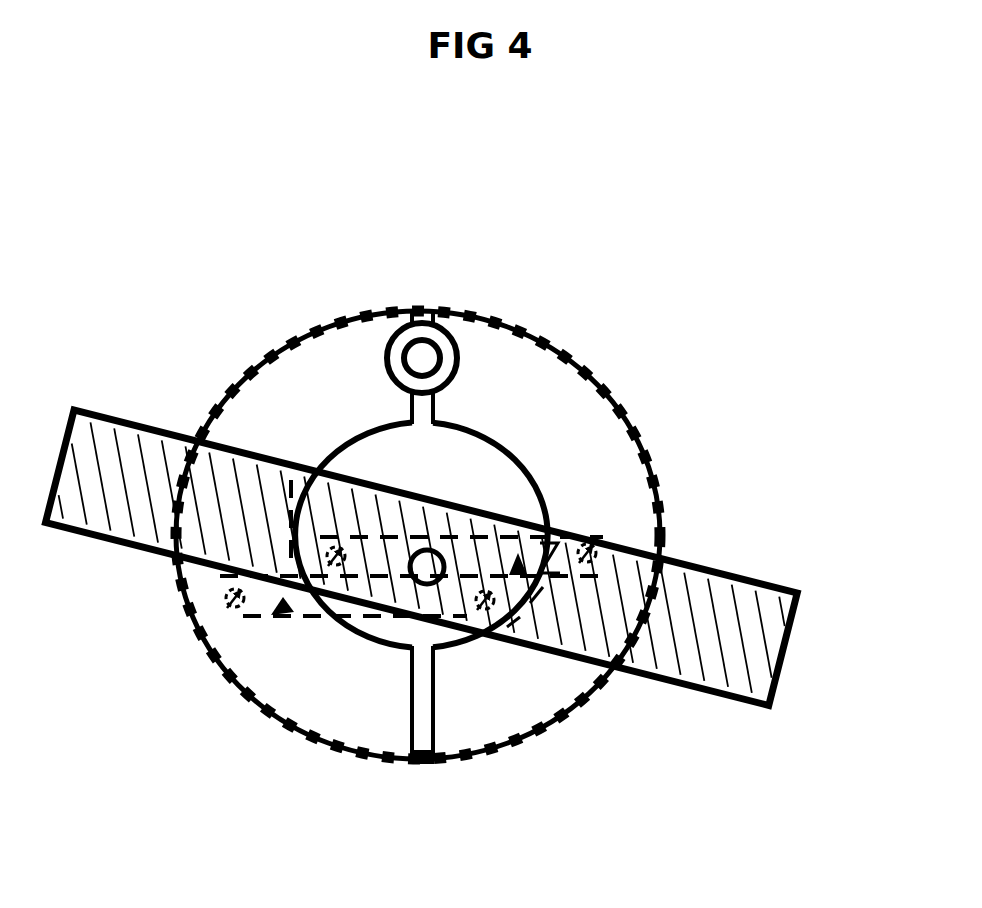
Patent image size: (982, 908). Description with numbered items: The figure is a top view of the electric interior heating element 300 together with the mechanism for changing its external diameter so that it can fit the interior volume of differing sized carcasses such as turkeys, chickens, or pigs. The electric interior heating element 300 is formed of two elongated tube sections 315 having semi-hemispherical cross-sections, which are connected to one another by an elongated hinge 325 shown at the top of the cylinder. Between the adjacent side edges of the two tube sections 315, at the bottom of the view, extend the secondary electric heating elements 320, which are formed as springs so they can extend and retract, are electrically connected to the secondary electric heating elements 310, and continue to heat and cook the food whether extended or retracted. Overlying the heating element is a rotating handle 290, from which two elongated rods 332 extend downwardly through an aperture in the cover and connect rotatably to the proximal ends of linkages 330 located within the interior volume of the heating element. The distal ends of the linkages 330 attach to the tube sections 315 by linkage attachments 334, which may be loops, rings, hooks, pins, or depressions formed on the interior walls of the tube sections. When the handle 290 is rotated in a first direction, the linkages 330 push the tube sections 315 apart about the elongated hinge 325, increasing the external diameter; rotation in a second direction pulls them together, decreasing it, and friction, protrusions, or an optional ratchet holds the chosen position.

The rotating handle 290 is at (717, 600).
The electric interior heating element 300 is at (578, 330).
The secondary electric heating elements 310 is at (233, 387).
The elongated tube sections 315 is at (333, 392).
The secondary electric heating elements 320 is at (423, 767).
The elongated hinge 325 is at (423, 352).
The linkages 330 is at (281, 612).
The elongated rods 332 is at (338, 565).
The linkage attachments 334 is at (230, 612).